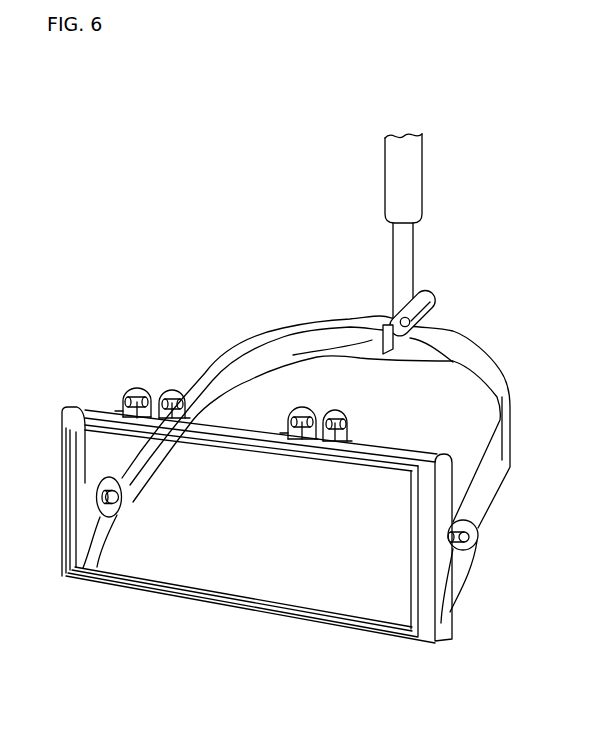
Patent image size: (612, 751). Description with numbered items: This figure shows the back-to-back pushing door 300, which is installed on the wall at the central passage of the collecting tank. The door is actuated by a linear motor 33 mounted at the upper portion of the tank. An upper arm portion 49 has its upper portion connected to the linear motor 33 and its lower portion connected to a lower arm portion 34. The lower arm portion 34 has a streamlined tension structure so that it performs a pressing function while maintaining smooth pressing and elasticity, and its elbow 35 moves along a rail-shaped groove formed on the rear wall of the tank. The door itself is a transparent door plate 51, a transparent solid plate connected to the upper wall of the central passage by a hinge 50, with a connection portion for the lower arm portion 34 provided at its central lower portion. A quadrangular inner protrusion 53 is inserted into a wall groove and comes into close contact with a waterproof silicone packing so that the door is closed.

The back-to-back pushing door 300 is at (248, 213).
The linear motor 33 is at (412, 200).
The upper arm portion 49 is at (405, 267).
The elbow 35 is at (430, 303).
The lower arm portion 34 is at (488, 378).
The hinge 50 is at (313, 417).
The transparent door plate 51 is at (262, 567).
The inner protrusion 53 is at (413, 590).